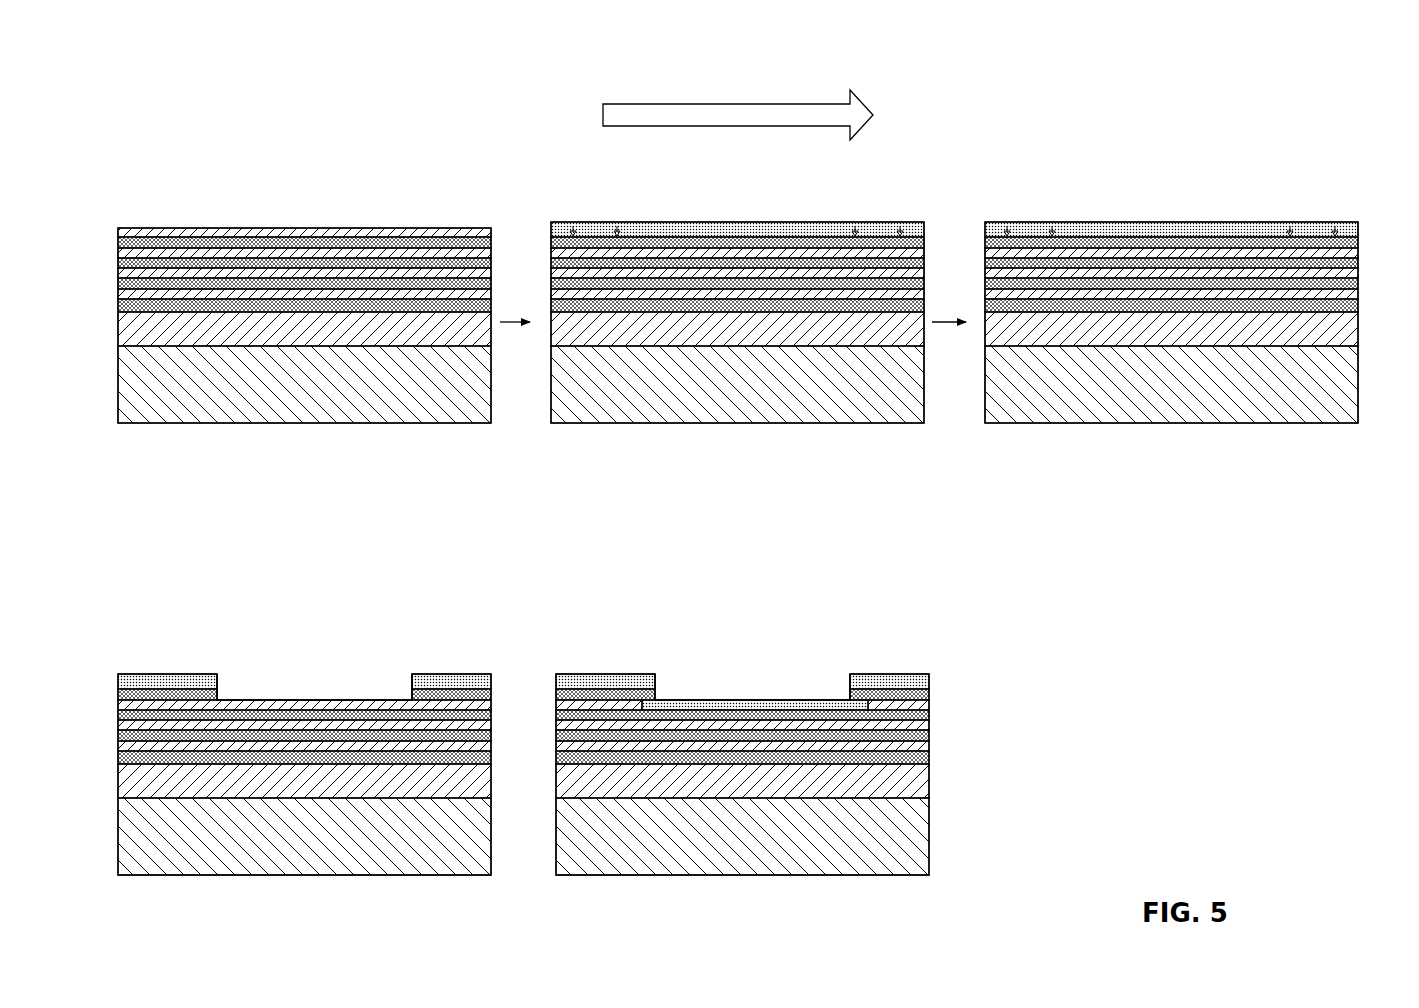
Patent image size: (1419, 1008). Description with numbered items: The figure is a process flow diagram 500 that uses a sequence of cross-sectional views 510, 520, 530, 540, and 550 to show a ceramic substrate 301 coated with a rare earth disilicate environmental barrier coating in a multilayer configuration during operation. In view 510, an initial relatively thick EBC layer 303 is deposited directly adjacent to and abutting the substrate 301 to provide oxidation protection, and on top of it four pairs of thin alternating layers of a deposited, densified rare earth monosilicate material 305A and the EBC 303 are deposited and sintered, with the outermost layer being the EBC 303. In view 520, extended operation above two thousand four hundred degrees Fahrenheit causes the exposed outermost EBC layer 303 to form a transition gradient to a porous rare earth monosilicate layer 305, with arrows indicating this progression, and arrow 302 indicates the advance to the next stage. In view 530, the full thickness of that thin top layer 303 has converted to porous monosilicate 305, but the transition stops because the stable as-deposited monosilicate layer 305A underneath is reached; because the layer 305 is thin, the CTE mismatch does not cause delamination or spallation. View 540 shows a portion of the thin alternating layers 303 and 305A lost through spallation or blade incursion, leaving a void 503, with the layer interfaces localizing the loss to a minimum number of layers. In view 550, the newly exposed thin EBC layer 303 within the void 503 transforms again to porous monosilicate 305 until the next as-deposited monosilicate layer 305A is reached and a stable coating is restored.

The process flow diagram 500 is at (224, 129).
The view 510 is at (212, 182).
The view 520 is at (676, 40).
The view 530 is at (1110, 145).
The view 540 is at (219, 596).
The view 550 is at (689, 596).
The deposition direction arrow 302 is at (735, 104).
The substrate 301 is at (283, 394).
The EBC layer 303 is at (283, 337).
The porous rare earth monosilicate layer 305 is at (923, 230).
The rare earth monosilicate material layer 305A is at (496, 272).
The void 503 is at (268, 688).